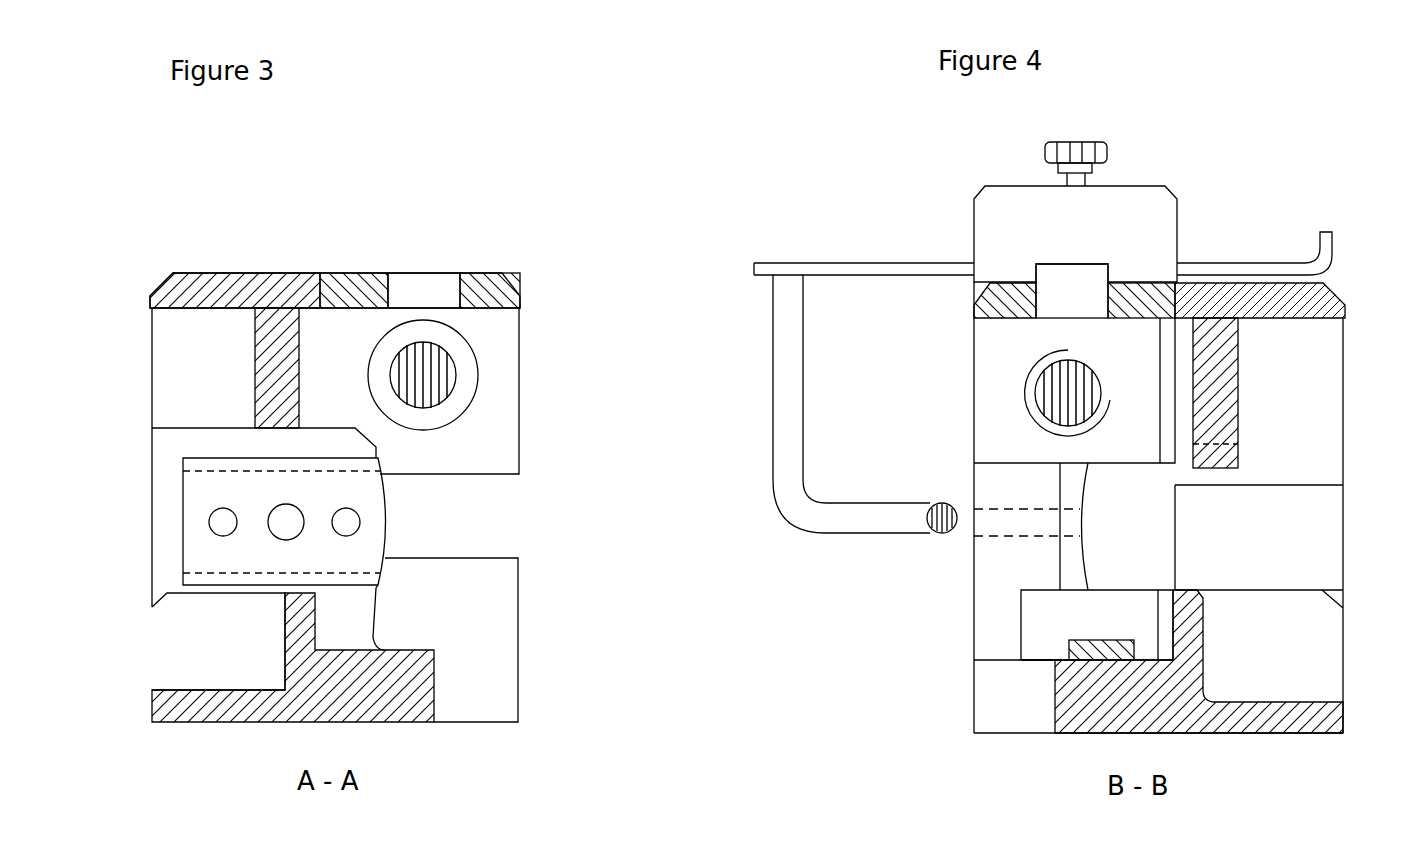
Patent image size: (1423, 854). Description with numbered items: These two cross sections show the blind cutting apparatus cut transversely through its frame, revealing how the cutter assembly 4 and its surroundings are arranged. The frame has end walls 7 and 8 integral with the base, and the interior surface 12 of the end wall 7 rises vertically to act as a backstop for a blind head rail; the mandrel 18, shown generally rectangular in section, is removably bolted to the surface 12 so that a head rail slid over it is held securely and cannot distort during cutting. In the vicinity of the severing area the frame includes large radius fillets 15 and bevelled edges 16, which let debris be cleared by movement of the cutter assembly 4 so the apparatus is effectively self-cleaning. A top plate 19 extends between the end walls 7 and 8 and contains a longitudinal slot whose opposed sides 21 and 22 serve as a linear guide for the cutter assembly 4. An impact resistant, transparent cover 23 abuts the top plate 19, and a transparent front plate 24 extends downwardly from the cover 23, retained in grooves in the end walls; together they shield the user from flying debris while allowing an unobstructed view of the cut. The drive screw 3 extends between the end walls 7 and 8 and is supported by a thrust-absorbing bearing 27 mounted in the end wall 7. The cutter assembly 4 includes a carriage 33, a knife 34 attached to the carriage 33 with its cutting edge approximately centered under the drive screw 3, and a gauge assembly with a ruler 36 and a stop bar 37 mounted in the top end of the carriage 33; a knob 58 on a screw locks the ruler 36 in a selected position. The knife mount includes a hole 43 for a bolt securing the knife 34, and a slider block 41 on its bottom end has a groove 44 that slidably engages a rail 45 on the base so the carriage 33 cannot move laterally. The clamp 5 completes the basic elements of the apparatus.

In FIG. 3, the drive screw 3 is at (452, 380).
In FIG. 4, the drive screw 3 is at (1040, 392).
In FIG. 4, the cutter assembly 4 is at (966, 181).
In FIG. 4, the clamp 5 is at (1350, 532).
In FIG. 3, the end wall 7 is at (335, 391).
In FIG. 4, the end wall 8 is at (1259, 525).
In FIG. 3, the interior surface 12 is at (165, 458).
In FIG. 3, the large radius fillet 15 is at (285, 688).
In FIG. 4, the large radius fillet 15 is at (1213, 697).
In FIG. 3, the bevelled edge 16 is at (158, 603).
In FIG. 3, the mandrel 18 is at (192, 507).
In FIG. 3, the top plate 19 is at (508, 292).
In FIG. 4, the top plate 19 is at (975, 308).
In FIG. 3, the slot side 21 is at (453, 290).
In FIG. 3, the slot side 22 is at (408, 273).
In FIG. 3, the transparent cover 23 is at (200, 273).
In FIG. 4, the transparent cover 23 is at (1335, 298).
In FIG. 3, the transparent front plate 24 is at (258, 380).
In FIG. 4, the transparent front plate 24 is at (1238, 343).
In FIG. 3, the bearing 27 is at (462, 350).
In FIG. 4, the carriage 33 is at (985, 432).
In FIG. 4, the knife 34 is at (1082, 510).
In FIG. 4, the ruler 36 is at (890, 268).
In FIG. 4, the stop bar 37 is at (786, 400).
In FIG. 4, the slider block 41 is at (1032, 613).
In FIG. 4, the hole 43 is at (975, 515).
In FIG. 4, the groove 44 is at (1081, 634).
In FIG. 4, the rail 45 is at (1070, 652).
In FIG. 4, the knob 58 is at (1108, 153).